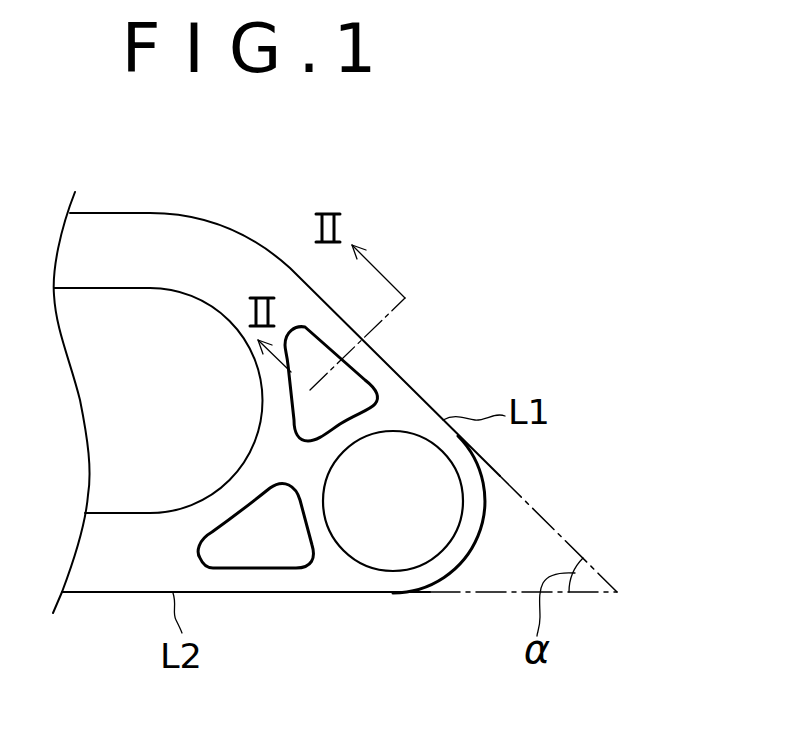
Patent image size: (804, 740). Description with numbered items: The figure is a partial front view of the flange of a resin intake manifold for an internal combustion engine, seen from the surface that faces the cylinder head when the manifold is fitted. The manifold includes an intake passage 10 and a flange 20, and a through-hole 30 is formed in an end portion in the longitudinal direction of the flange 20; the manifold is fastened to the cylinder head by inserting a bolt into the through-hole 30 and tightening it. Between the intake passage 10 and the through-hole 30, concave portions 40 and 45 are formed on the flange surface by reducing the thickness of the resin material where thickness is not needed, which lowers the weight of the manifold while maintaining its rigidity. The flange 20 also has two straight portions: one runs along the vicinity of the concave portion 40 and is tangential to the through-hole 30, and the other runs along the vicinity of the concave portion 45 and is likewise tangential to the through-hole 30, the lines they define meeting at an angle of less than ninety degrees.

The intake passage 10 is at (130, 289).
The flange 20 is at (197, 262).
The through-hole 30 is at (393, 433).
The concave portion 40 is at (370, 382).
The concave portion 45 is at (258, 568).